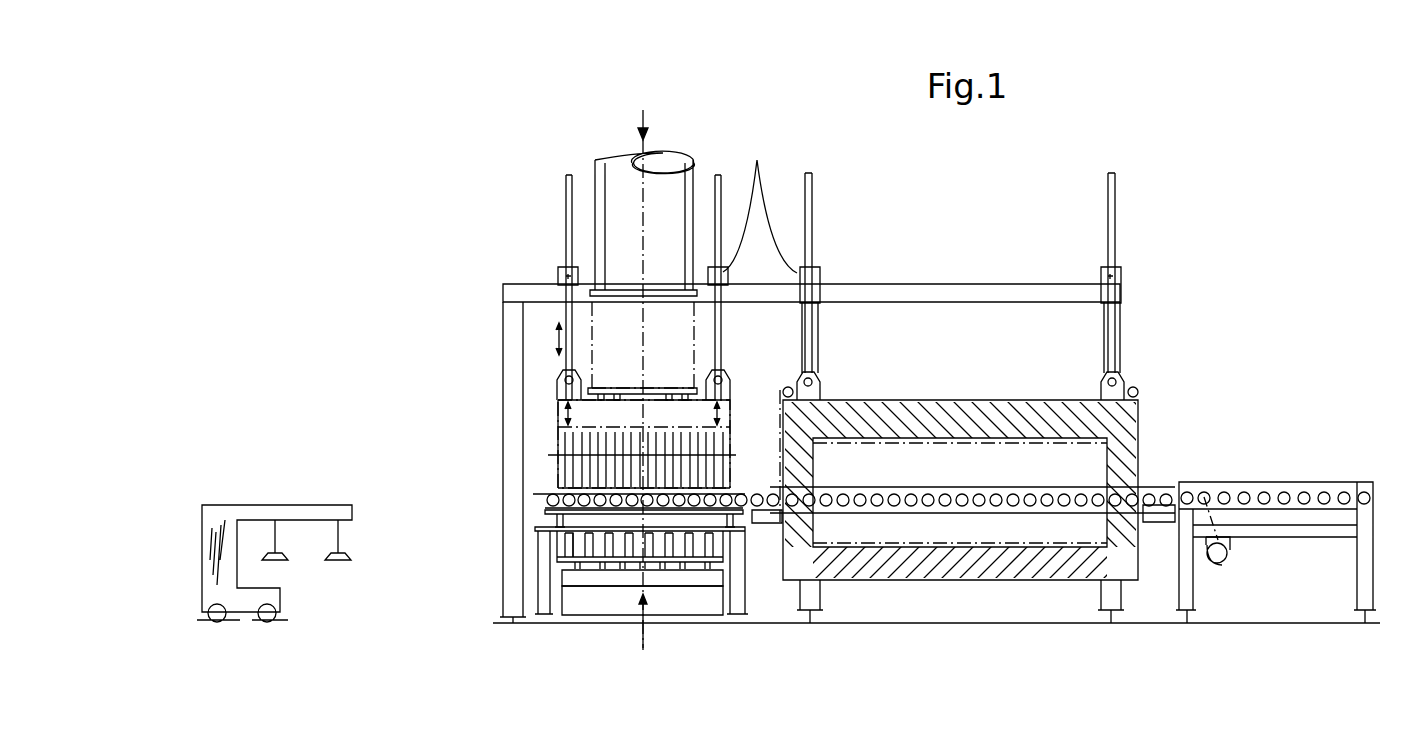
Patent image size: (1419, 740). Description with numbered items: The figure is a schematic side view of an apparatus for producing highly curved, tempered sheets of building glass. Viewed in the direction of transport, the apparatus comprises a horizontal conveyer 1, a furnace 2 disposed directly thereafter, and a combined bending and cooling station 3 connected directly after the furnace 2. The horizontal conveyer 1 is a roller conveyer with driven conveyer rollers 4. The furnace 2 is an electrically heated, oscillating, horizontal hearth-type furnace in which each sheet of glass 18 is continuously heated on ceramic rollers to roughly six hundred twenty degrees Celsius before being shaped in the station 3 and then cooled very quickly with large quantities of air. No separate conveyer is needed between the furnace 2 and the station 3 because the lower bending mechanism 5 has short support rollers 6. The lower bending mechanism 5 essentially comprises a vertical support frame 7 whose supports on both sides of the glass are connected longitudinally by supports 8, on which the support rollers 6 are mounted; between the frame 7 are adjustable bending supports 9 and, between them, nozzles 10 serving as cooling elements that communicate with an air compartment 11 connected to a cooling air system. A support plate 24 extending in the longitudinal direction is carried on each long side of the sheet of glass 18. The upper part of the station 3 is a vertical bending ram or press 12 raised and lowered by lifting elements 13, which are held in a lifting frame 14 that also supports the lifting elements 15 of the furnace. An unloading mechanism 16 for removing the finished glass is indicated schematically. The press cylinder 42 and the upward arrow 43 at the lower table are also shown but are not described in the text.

The horizontal conveyer 1 is at (1256, 483).
The furnace 2 is at (892, 445).
The combined bending and cooling station 3 is at (545, 492).
The driven conveyer rollers 4 is at (1222, 490).
The lower bending mechanism 5 is at (557, 545).
The support rollers 6 is at (745, 496).
The vertical support frame 7 is at (511, 596).
The supports 8 is at (540, 524).
The adjustable bending supports 9 is at (718, 543).
The nozzles 10 is at (693, 545).
The air compartment 11 is at (583, 598).
The vertical bending ram or press 12 is at (554, 409).
The lifting elements 13 is at (560, 272).
The lifting frame 14 is at (973, 292).
The lifting elements of the furnace 15 is at (1112, 272).
The unloading mechanism 16 is at (240, 512).
The sheet of glass 18 is at (712, 495).
The support plate 24 is at (545, 508).
The press cylinder 42 is at (615, 190).
The lifting direction arrow 43 is at (643, 632).